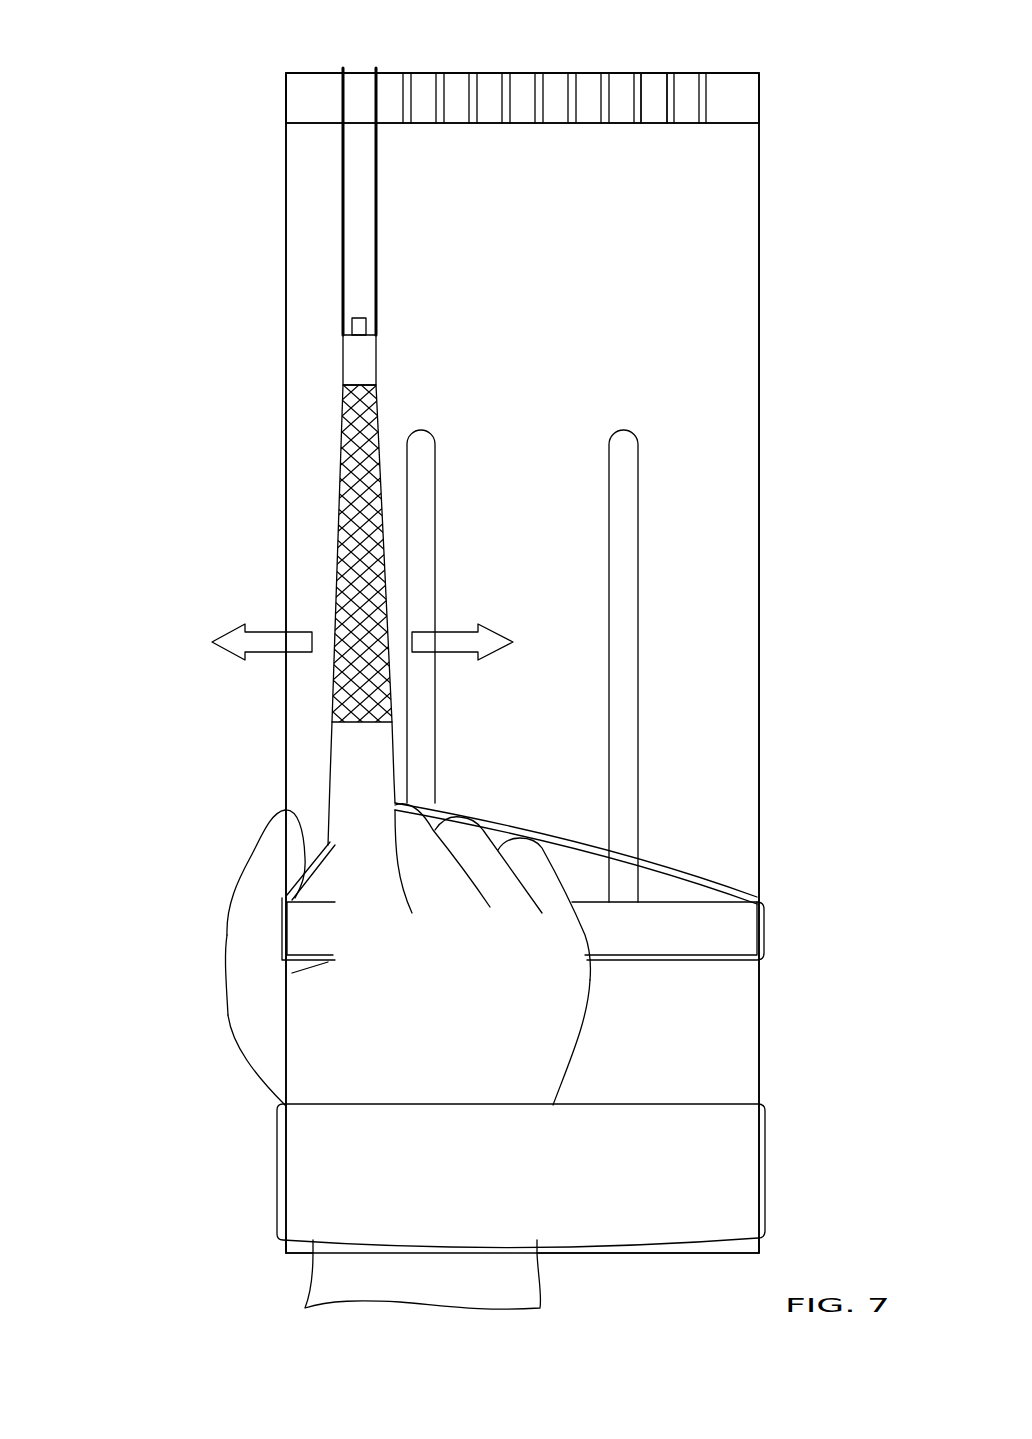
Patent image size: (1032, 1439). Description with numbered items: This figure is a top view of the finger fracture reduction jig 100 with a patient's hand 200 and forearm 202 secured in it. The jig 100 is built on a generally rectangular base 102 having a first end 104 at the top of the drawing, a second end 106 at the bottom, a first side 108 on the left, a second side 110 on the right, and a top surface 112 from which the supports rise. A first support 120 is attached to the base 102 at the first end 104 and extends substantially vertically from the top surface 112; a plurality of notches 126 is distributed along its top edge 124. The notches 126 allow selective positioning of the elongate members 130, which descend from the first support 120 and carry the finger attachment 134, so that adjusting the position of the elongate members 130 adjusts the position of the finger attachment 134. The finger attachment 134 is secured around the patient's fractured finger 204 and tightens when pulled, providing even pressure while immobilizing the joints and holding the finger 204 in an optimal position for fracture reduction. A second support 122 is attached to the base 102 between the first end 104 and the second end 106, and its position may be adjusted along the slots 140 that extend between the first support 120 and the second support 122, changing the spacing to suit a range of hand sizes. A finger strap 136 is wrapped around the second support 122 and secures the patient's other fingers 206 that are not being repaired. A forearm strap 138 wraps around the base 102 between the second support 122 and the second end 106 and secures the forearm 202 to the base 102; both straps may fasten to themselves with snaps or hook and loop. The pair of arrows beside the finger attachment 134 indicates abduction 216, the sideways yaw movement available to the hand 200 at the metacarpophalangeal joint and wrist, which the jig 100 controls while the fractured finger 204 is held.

The finger fracture reduction jig 100 is at (238, 96).
The base 102 is at (740, 365).
The first end 104 is at (311, 123).
The second end 106 is at (710, 1255).
The first side 108 is at (283, 532).
The second side 110 is at (759, 285).
The top surface 112 is at (748, 418).
The first support 120 is at (735, 93).
The second support 122 is at (762, 943).
The top edge 124 is at (427, 93).
The notches 126 is at (637, 86).
The elongate members 130 is at (342, 82).
The finger attachment 134 is at (338, 428).
The finger strap 136 is at (280, 900).
The forearm strap 138 is at (373, 1156).
The slots 140 is at (759, 560).
The hand 200 is at (346, 1036).
The forearm 202 is at (338, 1265).
The fractured finger 204 is at (347, 735).
The fingers 206 is at (287, 862).
The abduction 216 is at (230, 642).